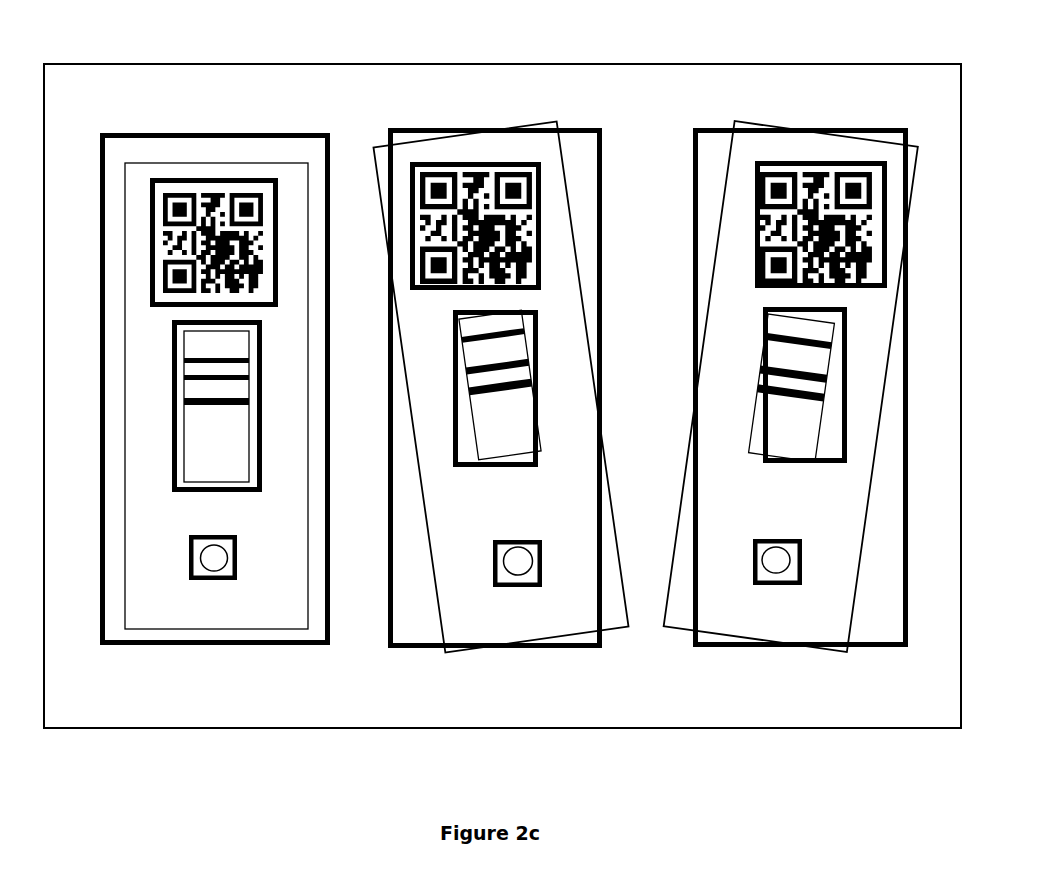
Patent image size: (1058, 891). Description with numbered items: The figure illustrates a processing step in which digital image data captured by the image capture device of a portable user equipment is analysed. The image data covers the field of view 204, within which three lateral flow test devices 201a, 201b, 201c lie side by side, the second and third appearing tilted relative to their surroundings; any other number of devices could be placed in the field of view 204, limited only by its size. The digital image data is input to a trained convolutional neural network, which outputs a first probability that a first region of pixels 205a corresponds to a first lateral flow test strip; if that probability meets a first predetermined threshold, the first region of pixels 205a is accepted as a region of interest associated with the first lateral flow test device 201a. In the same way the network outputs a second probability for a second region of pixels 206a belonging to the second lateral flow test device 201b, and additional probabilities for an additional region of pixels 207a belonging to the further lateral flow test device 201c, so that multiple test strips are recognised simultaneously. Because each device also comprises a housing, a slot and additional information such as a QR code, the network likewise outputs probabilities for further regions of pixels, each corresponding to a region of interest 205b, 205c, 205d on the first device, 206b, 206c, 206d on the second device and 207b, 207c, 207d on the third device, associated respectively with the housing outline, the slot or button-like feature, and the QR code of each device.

The first lateral flow test device 201a is at (142, 605).
The second lateral flow test device 201b is at (612, 617).
The further lateral flow test device 201c is at (686, 620).
The field of view 204 is at (488, 63).
The first region of pixels 205a is at (182, 492).
The region of interest 205b is at (207, 645).
The region of interest 205c is at (237, 580).
The region of interest 205d is at (208, 177).
The second region of pixels 206a is at (463, 468).
The region of interest 206b is at (578, 645).
The region of interest 206c is at (503, 587).
The region of interest 206d is at (470, 163).
The additional region of pixels 207a is at (835, 464).
The region of interest 207b is at (892, 647).
The region of interest 207c is at (793, 585).
The region of interest 207d is at (792, 160).